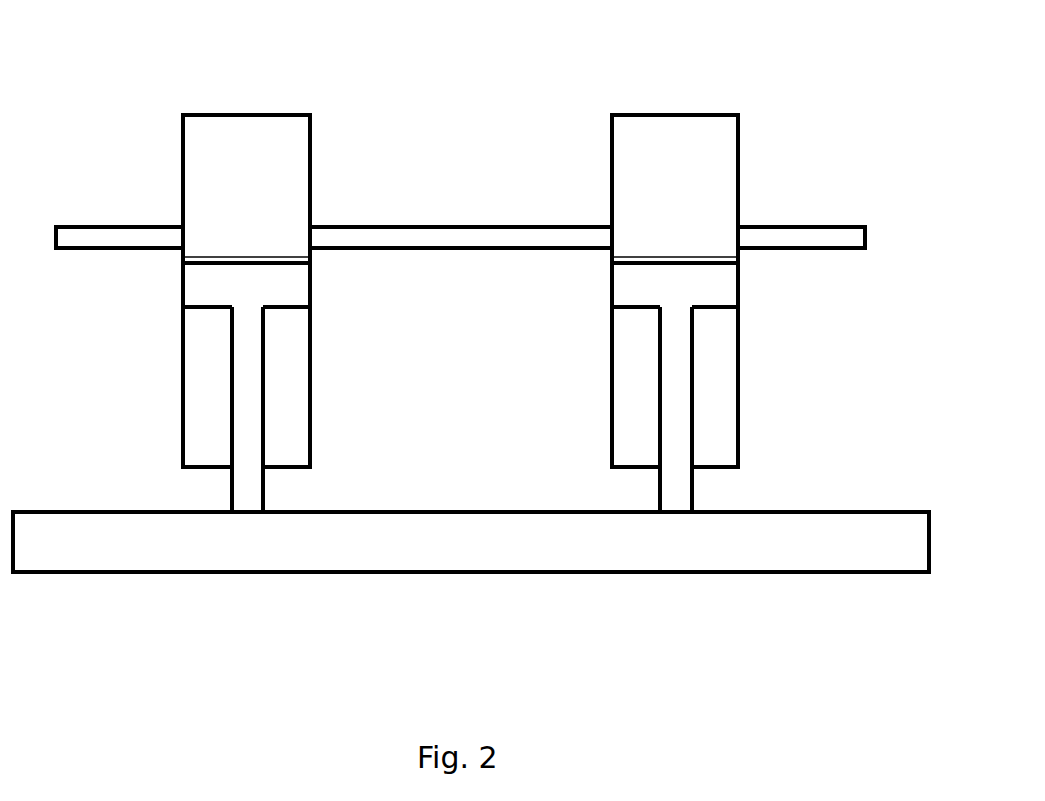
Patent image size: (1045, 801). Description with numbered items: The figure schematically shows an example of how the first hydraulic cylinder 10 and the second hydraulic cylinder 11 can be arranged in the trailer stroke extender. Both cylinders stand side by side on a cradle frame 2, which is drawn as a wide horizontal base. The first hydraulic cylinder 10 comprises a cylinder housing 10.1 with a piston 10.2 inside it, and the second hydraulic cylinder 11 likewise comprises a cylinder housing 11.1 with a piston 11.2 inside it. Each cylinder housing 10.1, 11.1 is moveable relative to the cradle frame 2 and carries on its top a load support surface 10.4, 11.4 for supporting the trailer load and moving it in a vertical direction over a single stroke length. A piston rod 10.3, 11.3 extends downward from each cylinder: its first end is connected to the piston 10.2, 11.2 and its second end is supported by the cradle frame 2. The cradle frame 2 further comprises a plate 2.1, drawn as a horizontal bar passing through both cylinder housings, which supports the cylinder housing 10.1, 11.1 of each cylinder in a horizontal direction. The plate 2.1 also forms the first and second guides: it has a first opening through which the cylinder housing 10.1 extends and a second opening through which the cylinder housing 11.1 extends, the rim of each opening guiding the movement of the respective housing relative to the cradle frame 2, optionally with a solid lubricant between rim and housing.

The cradle frame 2 is at (312, 542).
The plate 2.1 is at (442, 238).
The first hydraulic cylinder 10 is at (256, 265).
The cylinder housing 10.1 is at (183, 160).
The piston 10.2 is at (208, 287).
The piston rod 10.3 is at (252, 410).
The load support surface 10.4 is at (243, 115).
The second hydraulic cylinder 11 is at (704, 268).
The cylinder housing 11.1 is at (740, 191).
The piston 11.2 is at (697, 287).
The piston rod 11.3 is at (678, 397).
The load support surface 11.4 is at (700, 115).